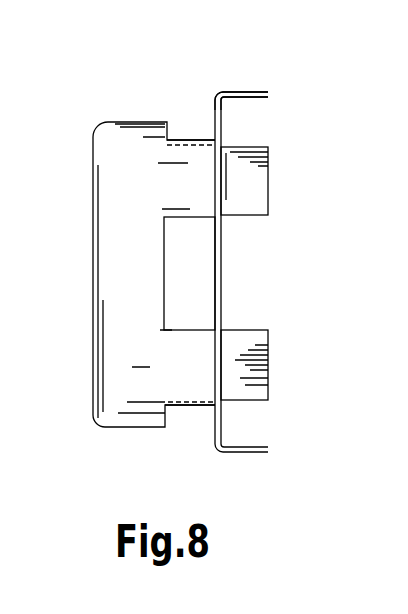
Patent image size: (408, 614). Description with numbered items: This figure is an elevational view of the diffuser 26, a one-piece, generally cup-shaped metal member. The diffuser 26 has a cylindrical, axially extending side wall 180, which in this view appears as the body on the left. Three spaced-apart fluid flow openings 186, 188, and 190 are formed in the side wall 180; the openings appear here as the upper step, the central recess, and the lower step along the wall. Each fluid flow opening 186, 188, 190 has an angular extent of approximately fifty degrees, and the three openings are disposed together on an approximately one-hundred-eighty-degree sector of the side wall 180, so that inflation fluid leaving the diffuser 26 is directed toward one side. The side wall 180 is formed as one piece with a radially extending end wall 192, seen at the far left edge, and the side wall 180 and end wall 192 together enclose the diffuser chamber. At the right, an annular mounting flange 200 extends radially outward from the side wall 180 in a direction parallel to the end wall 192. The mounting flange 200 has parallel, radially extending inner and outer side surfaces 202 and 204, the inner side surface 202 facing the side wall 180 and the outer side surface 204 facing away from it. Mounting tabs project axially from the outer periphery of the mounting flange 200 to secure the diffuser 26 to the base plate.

The diffuser 26 is at (96, 466).
The side wall 180 is at (162, 120).
The fluid flow opening 186 is at (183, 137).
The fluid flow opening 188 is at (188, 284).
The fluid flow opening 190 is at (185, 408).
The end wall 192 is at (93, 240).
The mounting flange 200 is at (222, 253).
The inner side surface 202 is at (214, 107).
The outer side surface 204 is at (223, 116).